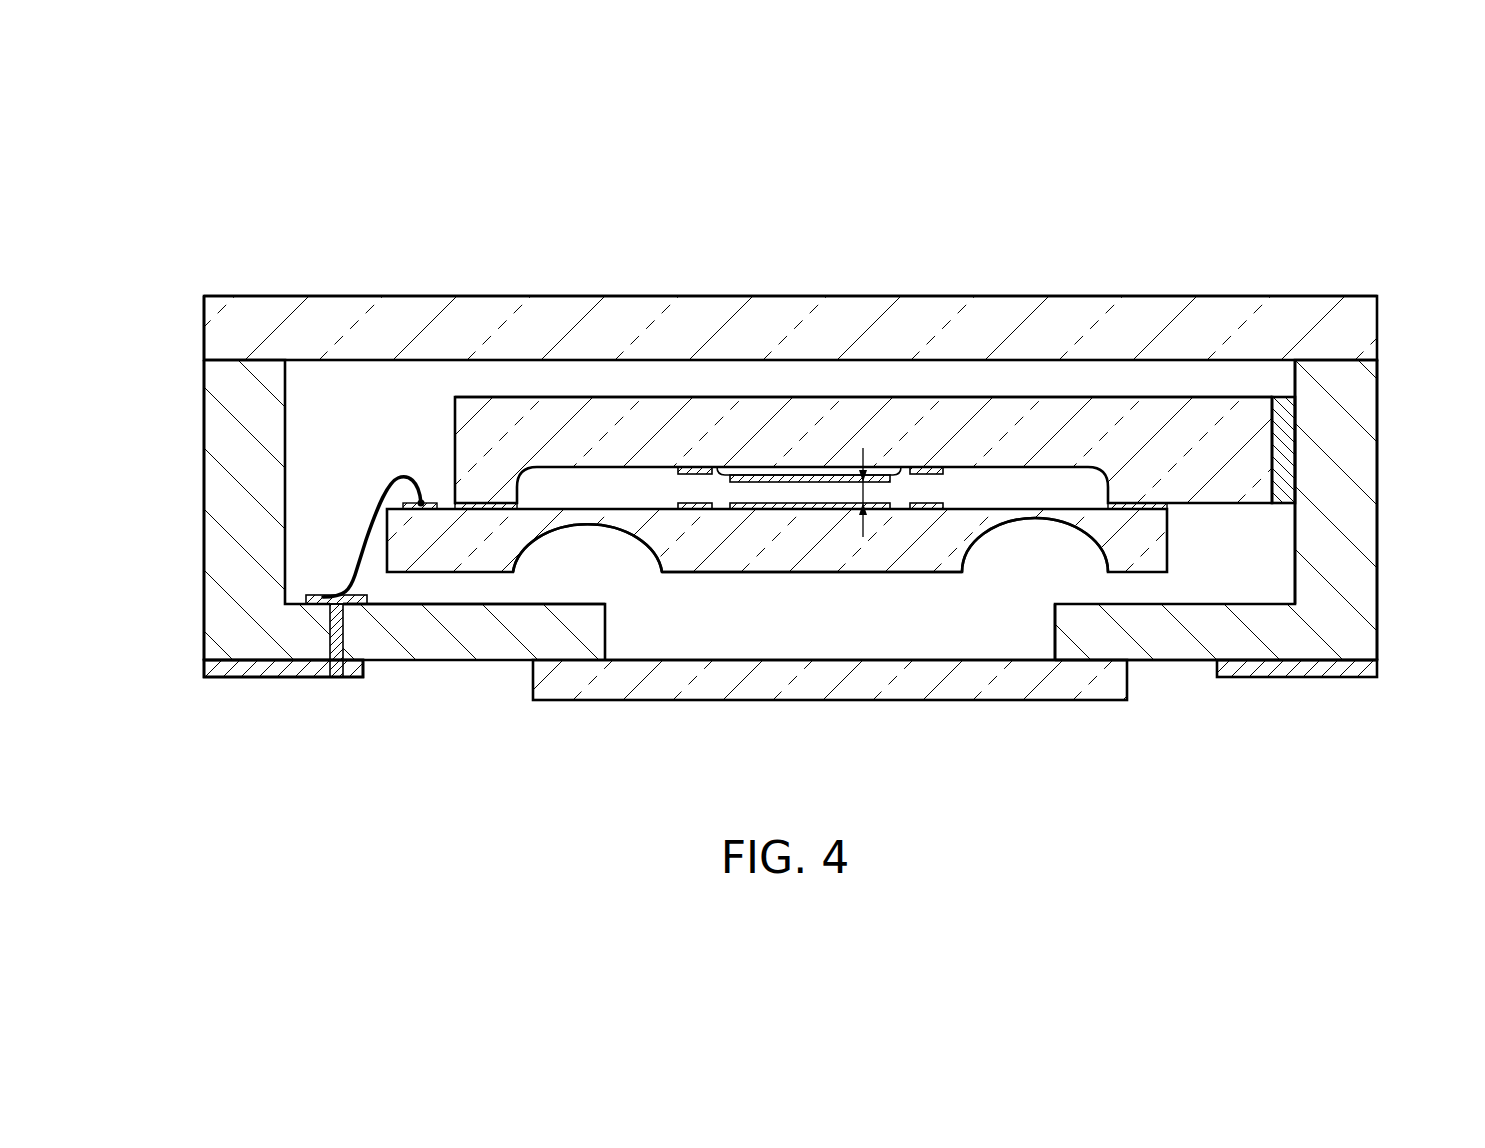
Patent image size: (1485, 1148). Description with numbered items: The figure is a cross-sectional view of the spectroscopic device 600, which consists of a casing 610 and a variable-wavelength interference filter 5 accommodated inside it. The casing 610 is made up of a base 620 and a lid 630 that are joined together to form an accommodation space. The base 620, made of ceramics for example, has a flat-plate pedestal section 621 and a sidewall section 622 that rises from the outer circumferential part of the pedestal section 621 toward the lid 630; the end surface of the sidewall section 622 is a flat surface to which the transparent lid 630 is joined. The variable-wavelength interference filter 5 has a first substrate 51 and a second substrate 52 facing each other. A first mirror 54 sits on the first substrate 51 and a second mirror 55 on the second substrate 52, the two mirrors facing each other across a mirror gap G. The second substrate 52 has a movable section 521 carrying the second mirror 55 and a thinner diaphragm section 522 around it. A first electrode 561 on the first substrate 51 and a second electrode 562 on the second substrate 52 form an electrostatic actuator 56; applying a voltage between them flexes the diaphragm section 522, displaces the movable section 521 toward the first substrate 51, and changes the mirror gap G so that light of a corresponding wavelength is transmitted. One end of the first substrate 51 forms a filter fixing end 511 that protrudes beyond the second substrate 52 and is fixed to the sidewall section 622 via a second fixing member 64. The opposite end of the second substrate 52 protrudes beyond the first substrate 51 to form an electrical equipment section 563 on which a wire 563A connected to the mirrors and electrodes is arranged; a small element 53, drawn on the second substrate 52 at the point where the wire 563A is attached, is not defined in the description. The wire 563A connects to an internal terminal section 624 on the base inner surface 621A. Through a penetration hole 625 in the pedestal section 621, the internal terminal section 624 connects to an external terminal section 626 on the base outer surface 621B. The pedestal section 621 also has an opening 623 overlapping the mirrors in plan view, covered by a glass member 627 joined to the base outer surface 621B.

The spectroscopic device 600 is at (1165, 208).
The variable-wavelength interference filter 5 is at (434, 372).
The first substrate 51 is at (727, 397).
The filter fixing end 511 is at (1193, 397).
The second substrate 52 is at (450, 574).
The movable section 521 is at (686, 565).
The diaphragm section 522 is at (597, 519).
The terminal pad 53 is at (445, 503).
The first mirror 54 is at (840, 475).
The second mirror 55 is at (792, 509).
The electrostatic actuator 56 is at (932, 247).
The first electrode 561 is at (940, 474).
The second electrode 562 is at (947, 503).
The electrical equipment section 563 is at (415, 588).
The wire 563A is at (421, 499).
The second fixing member 64 is at (1287, 410).
The casing 610 is at (182, 470).
The base 620 is at (203, 587).
The pedestal section 621 is at (1188, 643).
The base inner surface 621A is at (497, 593).
The base outer surface 621B is at (223, 665).
The sidewall section 622 is at (1357, 532).
The opening 623 is at (1055, 640).
The internal terminal section 624 is at (317, 594).
The penetration hole 625 is at (333, 640).
The external terminal section 626 is at (268, 678).
The glass member 627 is at (942, 701).
The lid 630 is at (203, 312).
The mirror gap G is at (872, 492).